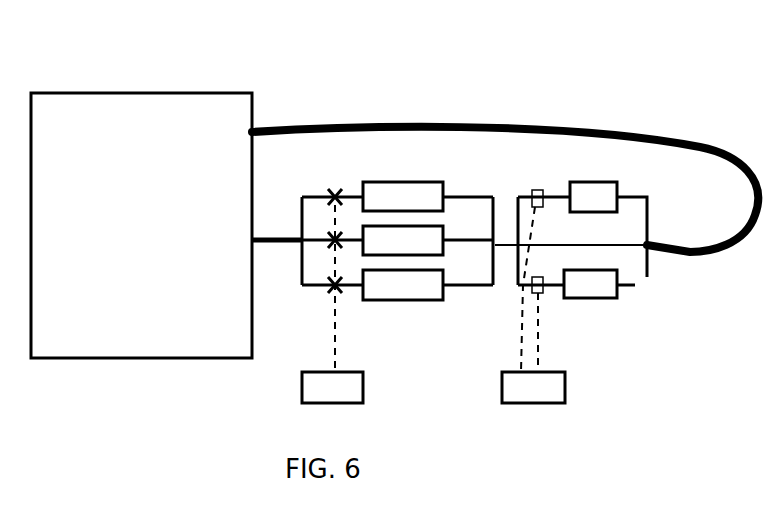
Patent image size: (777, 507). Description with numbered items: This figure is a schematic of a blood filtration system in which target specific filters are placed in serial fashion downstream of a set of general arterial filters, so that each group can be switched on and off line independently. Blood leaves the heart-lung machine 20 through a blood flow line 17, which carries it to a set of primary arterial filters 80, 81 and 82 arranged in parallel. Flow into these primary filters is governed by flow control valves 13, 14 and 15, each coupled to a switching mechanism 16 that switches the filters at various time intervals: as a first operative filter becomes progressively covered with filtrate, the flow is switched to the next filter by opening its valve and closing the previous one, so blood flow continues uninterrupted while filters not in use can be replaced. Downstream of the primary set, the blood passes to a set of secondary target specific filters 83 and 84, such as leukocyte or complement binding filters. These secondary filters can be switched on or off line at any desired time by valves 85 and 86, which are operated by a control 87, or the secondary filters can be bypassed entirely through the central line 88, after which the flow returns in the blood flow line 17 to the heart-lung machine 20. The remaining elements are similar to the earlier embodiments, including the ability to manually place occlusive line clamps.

The heart-lung machine 20 is at (163, 93).
The blood flow line 17 is at (440, 122).
The flow control valve 15 is at (328, 197).
The flow control valve 14 is at (332, 246).
The flow control valve 13 is at (330, 291).
The primary arterial filter 80 is at (420, 196).
The primary arterial filter 81 is at (430, 239).
The primary arterial filter 82 is at (403, 295).
The switching mechanism 16 is at (363, 398).
The central line 88 is at (630, 245).
The secondary target specific filter 84 is at (605, 197).
The secondary target specific filter 83 is at (598, 290).
The valve 86 is at (537, 190).
The valve 85 is at (540, 295).
The control 87 is at (533, 390).